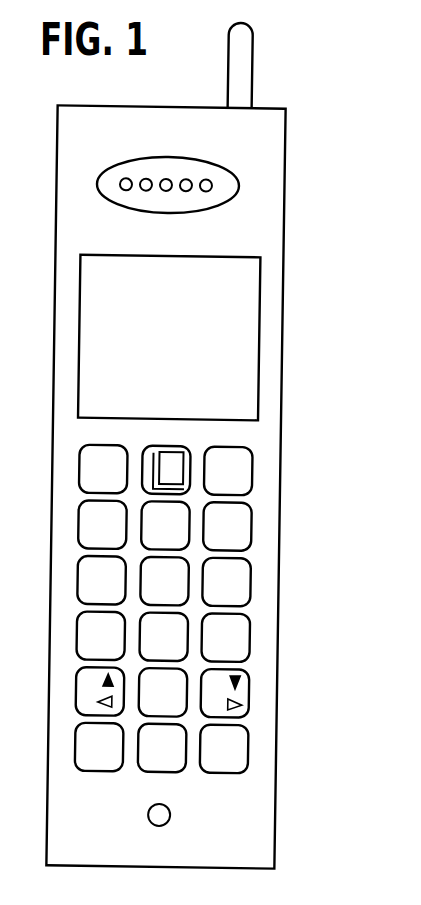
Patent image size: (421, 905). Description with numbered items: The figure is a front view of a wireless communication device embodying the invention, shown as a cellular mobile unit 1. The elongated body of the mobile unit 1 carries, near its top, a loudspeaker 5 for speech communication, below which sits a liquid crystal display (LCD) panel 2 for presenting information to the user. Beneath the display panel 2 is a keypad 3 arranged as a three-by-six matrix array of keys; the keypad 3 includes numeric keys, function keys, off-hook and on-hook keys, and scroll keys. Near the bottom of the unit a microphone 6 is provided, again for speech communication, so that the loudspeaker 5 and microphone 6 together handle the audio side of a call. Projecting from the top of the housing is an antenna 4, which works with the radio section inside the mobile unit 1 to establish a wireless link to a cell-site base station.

The cellular mobile unit 1 is at (280, 210).
The liquid crystal display panel 2 is at (257, 316).
The keypad 3 is at (289, 780).
The antenna 4 is at (249, 59).
The loudspeaker 5 is at (227, 169).
The microphone 6 is at (175, 815).